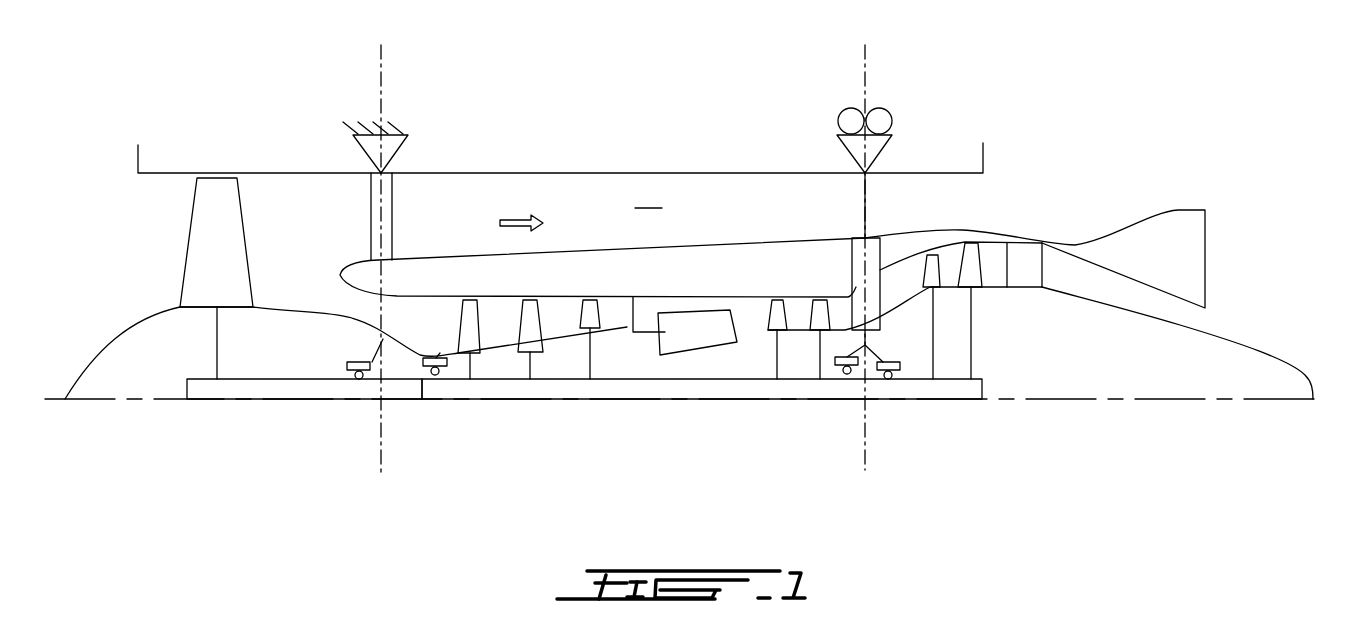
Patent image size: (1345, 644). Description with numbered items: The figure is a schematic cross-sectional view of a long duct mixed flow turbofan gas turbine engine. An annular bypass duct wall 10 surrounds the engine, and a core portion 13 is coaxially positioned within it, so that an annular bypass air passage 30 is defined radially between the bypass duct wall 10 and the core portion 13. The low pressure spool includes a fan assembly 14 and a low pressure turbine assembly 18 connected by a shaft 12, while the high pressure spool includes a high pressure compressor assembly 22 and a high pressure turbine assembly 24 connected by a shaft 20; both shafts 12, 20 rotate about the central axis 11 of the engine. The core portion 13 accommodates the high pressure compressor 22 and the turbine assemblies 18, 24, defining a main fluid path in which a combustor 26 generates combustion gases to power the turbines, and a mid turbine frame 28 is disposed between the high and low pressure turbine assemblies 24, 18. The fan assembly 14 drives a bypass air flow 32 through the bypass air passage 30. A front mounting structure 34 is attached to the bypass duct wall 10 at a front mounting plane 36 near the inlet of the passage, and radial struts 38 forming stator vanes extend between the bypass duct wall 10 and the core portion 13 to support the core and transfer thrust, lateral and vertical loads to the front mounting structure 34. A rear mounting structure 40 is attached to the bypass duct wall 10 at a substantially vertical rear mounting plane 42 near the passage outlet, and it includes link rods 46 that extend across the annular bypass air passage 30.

The annular bypass duct wall 10 is at (556, 172).
The central axis 11 is at (1242, 400).
The shaft 12 is at (273, 388).
The core portion 13 is at (752, 240).
The fan assembly 14 is at (216, 195).
The low pressure turbine assembly 18 is at (973, 273).
The shaft 20 is at (738, 387).
The high pressure compressor assembly 22 is at (512, 381).
The high pressure turbine assembly 24 is at (818, 320).
The combustor 26 is at (683, 333).
The mid turbine frame 28 is at (883, 322).
The annular bypass air passage 30 is at (648, 195).
The bypass air flow 32 is at (512, 217).
The front mounting structure 34 is at (400, 130).
The front mounting plane 36 is at (382, 75).
The radial struts 38 is at (371, 216).
The rear mounting structure 40 is at (879, 118).
The rear mounting plane 42 is at (863, 60).
The link rods 46 is at (867, 203).